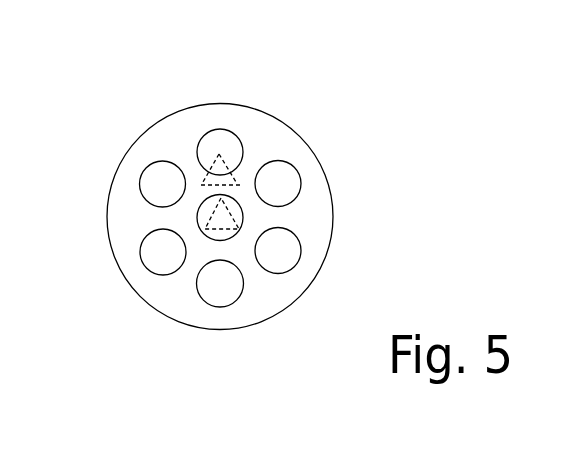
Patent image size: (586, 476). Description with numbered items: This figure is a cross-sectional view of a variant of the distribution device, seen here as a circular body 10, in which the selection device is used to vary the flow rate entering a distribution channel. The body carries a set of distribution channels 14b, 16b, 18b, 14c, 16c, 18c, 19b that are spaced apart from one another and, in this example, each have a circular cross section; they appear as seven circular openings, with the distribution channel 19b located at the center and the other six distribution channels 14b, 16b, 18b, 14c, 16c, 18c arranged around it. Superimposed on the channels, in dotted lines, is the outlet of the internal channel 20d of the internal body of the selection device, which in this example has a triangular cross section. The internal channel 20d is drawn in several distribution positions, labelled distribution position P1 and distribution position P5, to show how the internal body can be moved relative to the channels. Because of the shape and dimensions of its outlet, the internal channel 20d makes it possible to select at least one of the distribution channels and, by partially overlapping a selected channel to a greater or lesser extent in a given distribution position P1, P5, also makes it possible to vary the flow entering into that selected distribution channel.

The coupling body 10 is at (323, 163).
The distribution channel 14b is at (142, 177).
The distribution channel 14c is at (144, 262).
The distribution channel 16b is at (207, 131).
The distribution channel 16c is at (207, 303).
The distribution channel 18b is at (285, 162).
The distribution channel 18c is at (300, 253).
The distribution channel 19b is at (198, 214).
The internal channel 20d is at (219, 152).
The distribution position P5 is at (201, 179).
The distribution position P1 is at (224, 217).